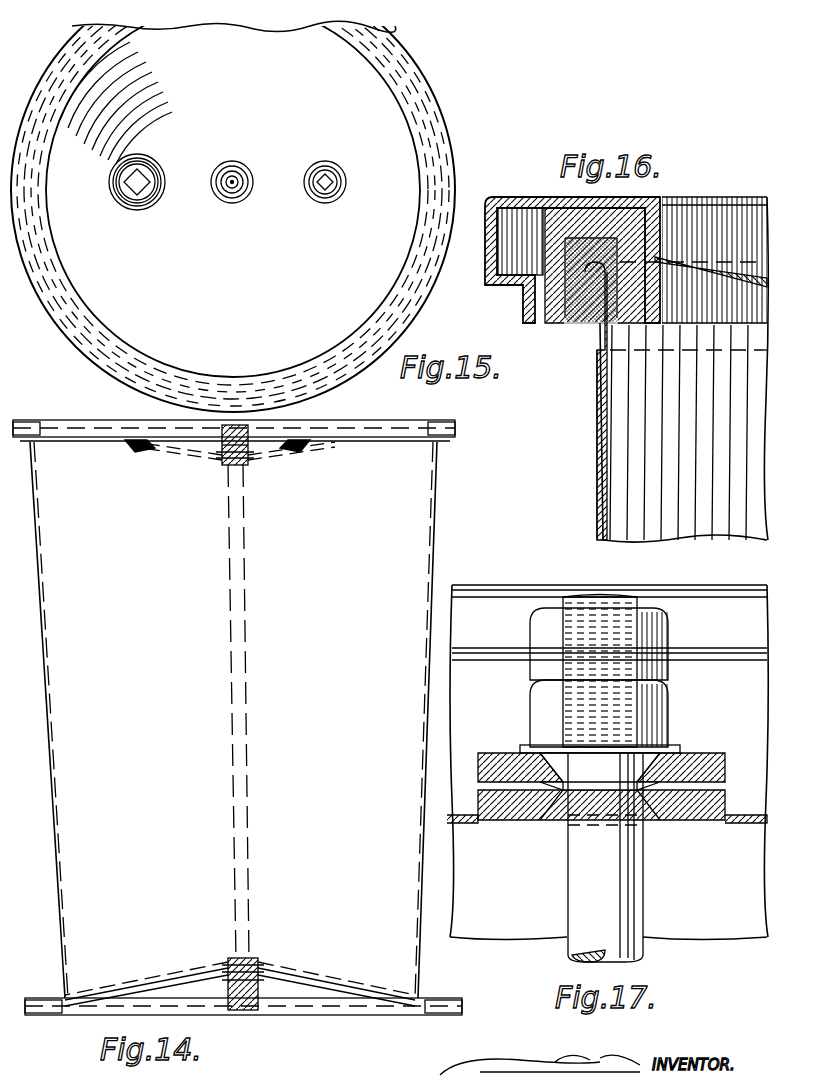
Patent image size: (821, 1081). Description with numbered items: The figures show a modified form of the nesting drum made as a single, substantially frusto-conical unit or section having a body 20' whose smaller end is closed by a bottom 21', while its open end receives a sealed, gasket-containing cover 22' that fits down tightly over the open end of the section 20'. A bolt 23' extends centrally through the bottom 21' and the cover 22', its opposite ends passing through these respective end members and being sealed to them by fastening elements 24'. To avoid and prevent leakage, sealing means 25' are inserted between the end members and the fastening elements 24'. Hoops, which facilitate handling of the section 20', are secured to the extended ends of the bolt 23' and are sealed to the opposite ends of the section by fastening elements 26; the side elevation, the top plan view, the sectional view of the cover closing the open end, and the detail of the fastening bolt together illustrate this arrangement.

In FIG. 14, the body 20' is at (268, 720).
In FIG. 14, the bottom 21' is at (243, 975).
In FIG. 15, the cover 22' is at (249, 206).
In FIG. 14, the cover 22' is at (258, 425).
In FIG. 16, the cover 22' is at (619, 369).
In FIG. 17, the cover 22' is at (607, 745).
In FIG. 15, the bolt 23' is at (227, 173).
In FIG. 14, the bolt 23' is at (235, 692).
In FIG. 16, the bolt 23' is at (596, 401).
In FIG. 17, the bolt 23' is at (630, 779).
In FIG. 17, the fastening elements 24' is at (626, 713).
In FIG. 17, the sealing means 25' is at (602, 772).
In FIG. 17, the fastening elements 26 is at (660, 633).